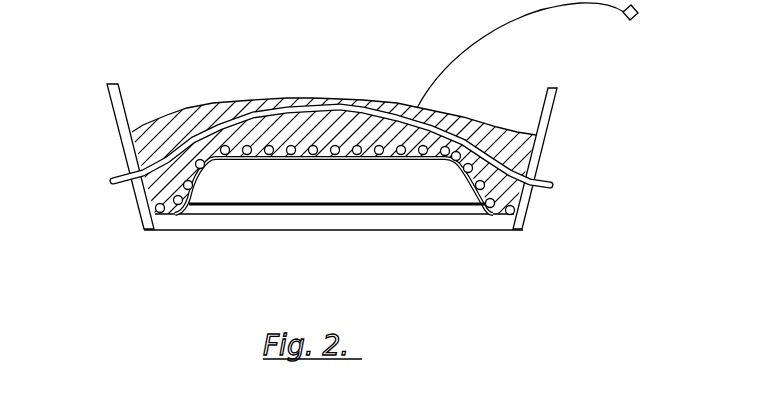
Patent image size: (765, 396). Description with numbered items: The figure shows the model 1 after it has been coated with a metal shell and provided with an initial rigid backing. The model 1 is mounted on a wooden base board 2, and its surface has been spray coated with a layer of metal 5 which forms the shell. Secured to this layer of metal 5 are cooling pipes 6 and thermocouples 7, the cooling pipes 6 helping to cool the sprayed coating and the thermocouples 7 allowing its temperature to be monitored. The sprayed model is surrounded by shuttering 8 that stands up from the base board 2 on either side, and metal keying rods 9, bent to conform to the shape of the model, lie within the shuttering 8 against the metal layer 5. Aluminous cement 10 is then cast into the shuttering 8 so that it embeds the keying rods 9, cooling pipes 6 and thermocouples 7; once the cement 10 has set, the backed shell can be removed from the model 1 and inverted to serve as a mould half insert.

The model 1 is at (350, 188).
The wooden base board 2 is at (252, 222).
The layer of metal 5 is at (448, 160).
The cooling pipes 6 is at (472, 148).
The thermocouples 7 is at (313, 146).
The shuttering 8 is at (132, 153).
The metal keying rods 9 is at (486, 150).
The aluminous cement 10 is at (203, 122).